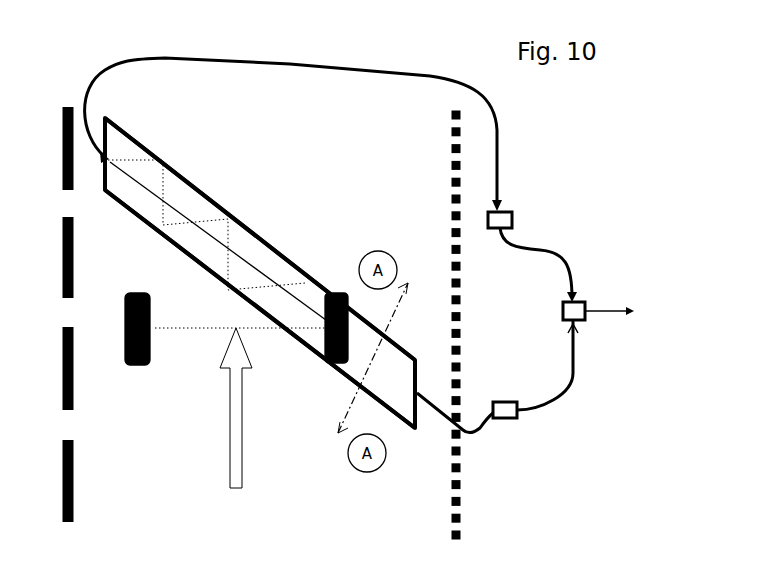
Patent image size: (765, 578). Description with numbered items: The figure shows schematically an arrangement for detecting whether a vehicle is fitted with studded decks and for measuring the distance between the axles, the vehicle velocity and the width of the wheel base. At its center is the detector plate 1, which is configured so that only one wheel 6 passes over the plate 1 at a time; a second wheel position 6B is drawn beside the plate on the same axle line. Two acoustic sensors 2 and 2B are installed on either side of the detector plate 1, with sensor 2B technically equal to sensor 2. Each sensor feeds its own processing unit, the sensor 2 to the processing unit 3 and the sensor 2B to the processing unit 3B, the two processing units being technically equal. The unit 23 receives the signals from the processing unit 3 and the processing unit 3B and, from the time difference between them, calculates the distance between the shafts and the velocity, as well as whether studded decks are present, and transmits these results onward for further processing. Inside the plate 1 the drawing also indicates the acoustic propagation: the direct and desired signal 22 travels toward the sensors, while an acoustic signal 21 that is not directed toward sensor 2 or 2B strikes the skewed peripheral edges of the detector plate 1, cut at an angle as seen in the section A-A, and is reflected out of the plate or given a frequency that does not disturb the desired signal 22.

The detector plate 1 is at (156, 160).
The acoustic signal 21 is at (232, 220).
The direct and desired signal 22 is at (273, 255).
The acoustic sensor 2 is at (420, 400).
The acoustic sensor 2B is at (104, 157).
The processing unit 3 is at (505, 401).
The processing unit 3B is at (506, 206).
The wheel 6 is at (338, 290).
The auxiliary light sensor 6B is at (138, 367).
The unit 23 is at (612, 302).